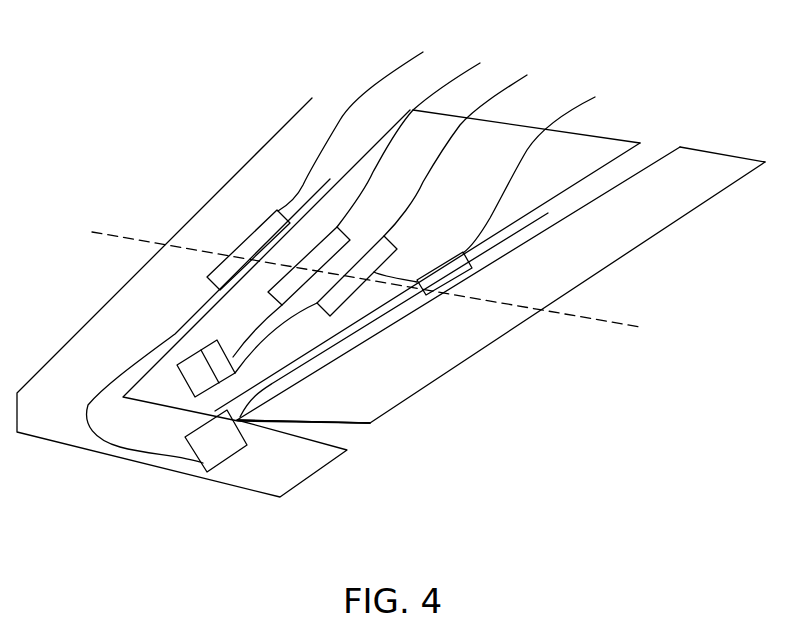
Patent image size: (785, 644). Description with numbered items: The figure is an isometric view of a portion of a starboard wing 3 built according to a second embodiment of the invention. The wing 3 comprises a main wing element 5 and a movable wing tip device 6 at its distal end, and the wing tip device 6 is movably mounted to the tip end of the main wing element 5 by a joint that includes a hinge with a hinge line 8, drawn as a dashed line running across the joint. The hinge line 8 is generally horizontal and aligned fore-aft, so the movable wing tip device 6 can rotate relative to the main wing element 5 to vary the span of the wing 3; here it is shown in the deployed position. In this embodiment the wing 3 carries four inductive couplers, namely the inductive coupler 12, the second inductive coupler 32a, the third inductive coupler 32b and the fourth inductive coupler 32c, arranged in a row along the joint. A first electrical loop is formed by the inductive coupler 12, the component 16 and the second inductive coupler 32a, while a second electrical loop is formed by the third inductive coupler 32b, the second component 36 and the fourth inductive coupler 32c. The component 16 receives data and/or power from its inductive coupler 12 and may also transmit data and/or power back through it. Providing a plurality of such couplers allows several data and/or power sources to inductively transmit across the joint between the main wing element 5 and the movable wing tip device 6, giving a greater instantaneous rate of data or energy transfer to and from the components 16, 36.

The starboard wing 3 is at (656, 70).
The main wing element 5 is at (260, 147).
The movable wing tip device 6 is at (82, 330).
The hinge line 8 is at (600, 325).
The inductive coupler 12 is at (302, 258).
The component 16 is at (190, 334).
The second inductive coupler 32a is at (391, 271).
The third inductive coupler 32b is at (236, 240).
The fourth inductive coupler 32c is at (430, 307).
The second component 36 is at (227, 460).